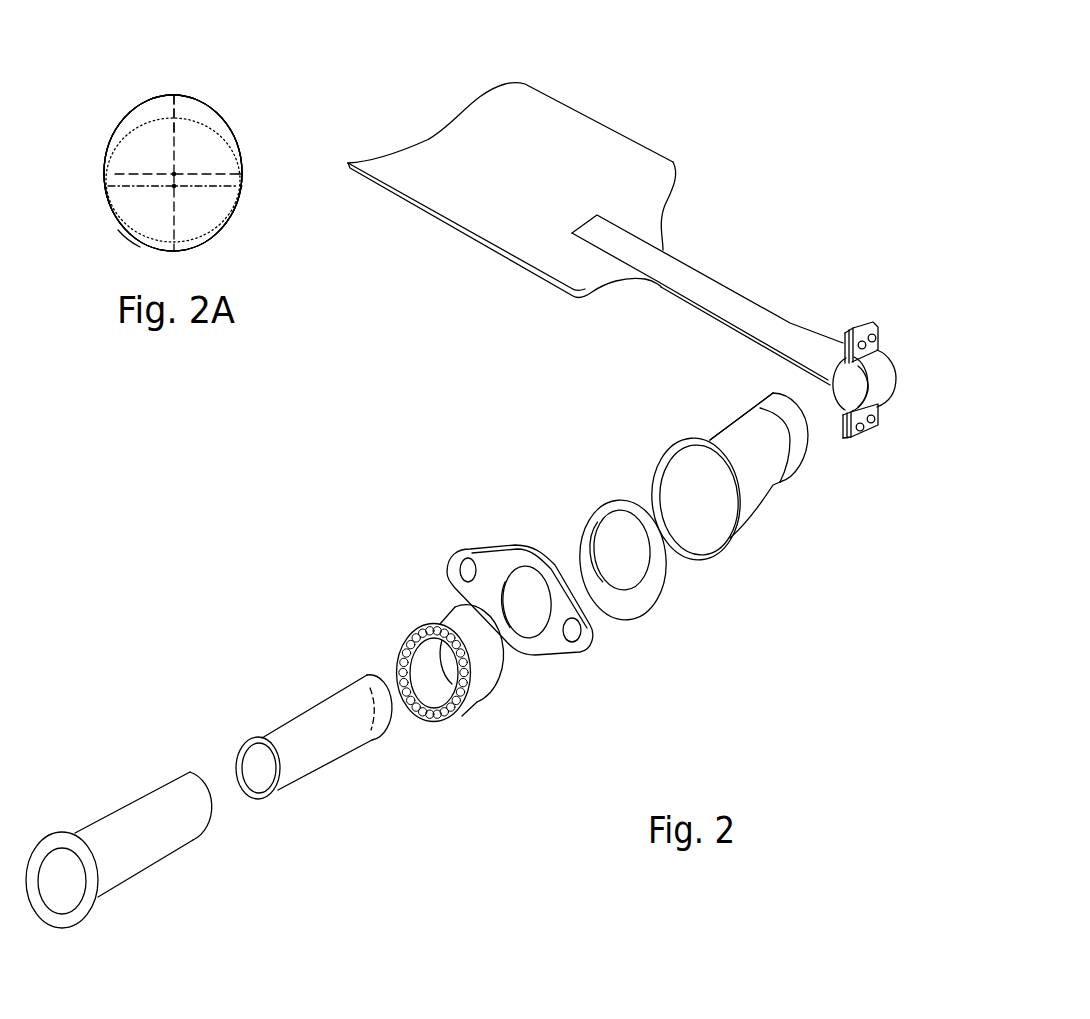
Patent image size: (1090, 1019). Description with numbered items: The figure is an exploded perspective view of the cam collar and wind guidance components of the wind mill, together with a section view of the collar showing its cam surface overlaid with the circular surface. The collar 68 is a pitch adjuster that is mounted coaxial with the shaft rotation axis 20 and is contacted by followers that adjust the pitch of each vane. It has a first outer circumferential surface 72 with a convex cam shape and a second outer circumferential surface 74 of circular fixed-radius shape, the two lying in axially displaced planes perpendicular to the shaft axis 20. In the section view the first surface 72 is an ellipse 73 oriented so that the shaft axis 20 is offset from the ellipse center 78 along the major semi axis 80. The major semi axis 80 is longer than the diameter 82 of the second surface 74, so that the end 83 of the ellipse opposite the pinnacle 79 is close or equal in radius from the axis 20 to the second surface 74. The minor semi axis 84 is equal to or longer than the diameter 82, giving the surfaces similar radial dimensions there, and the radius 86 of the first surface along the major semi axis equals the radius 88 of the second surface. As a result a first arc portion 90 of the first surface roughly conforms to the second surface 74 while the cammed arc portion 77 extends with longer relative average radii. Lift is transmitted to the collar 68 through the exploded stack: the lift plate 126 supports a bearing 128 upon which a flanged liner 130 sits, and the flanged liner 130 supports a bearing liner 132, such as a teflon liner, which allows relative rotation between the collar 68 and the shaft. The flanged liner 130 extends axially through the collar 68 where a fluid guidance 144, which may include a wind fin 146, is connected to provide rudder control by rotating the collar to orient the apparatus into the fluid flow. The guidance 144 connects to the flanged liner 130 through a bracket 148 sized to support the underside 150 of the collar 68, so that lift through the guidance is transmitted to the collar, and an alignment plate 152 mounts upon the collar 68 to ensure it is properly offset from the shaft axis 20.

In FIG. 2A, the shaft rotation axis 20 is at (177, 186).
In FIG. 2A, the collar 68 is at (240, 174).
In FIG. 2, the collar 68 is at (752, 520).
In FIG. 2A, the first outer circumferential surface 72 is at (240, 137).
In FIG. 2, the first outer circumferential surface 72 is at (746, 506).
In FIG. 2A, the ellipse 73 is at (173, 173).
In FIG. 2A, the second outer circumferential surface 74 is at (207, 128).
In FIG. 2, the second outer circumferential surface 74 is at (773, 483).
In FIG. 2A, the cammed arc portion 77 is at (190, 80).
In FIG. 2A, the ellipse center 78 is at (173, 174).
In FIG. 2A, the pinnacle 79 is at (173, 95).
In FIG. 2A, the major semi axis 80 is at (173, 135).
In FIG. 2A, the diameter 82 is at (233, 197).
In FIG. 2A, the end 83 is at (173, 255).
In FIG. 2A, the minor semi axis 84 is at (217, 174).
In FIG. 2A, the radius 86 is at (173, 220).
In FIG. 2A, the radius 88 is at (130, 187).
In FIG. 2A, the first arc portion 90 is at (195, 265).
In FIG. 2, the lift plate 126 is at (563, 643).
In FIG. 2, the bearing 128 is at (442, 626).
In FIG. 2, the flanged liner 130 is at (128, 828).
In FIG. 2, the bearing liner 132 is at (293, 735).
In FIG. 2, the fluid guidance 144 is at (747, 305).
In FIG. 2, the wind fin 146 is at (642, 167).
In FIG. 2, the bracket 148 is at (828, 325).
In FIG. 2, the underside 150 is at (805, 458).
In FIG. 2, the alignment plate 152 is at (593, 523).